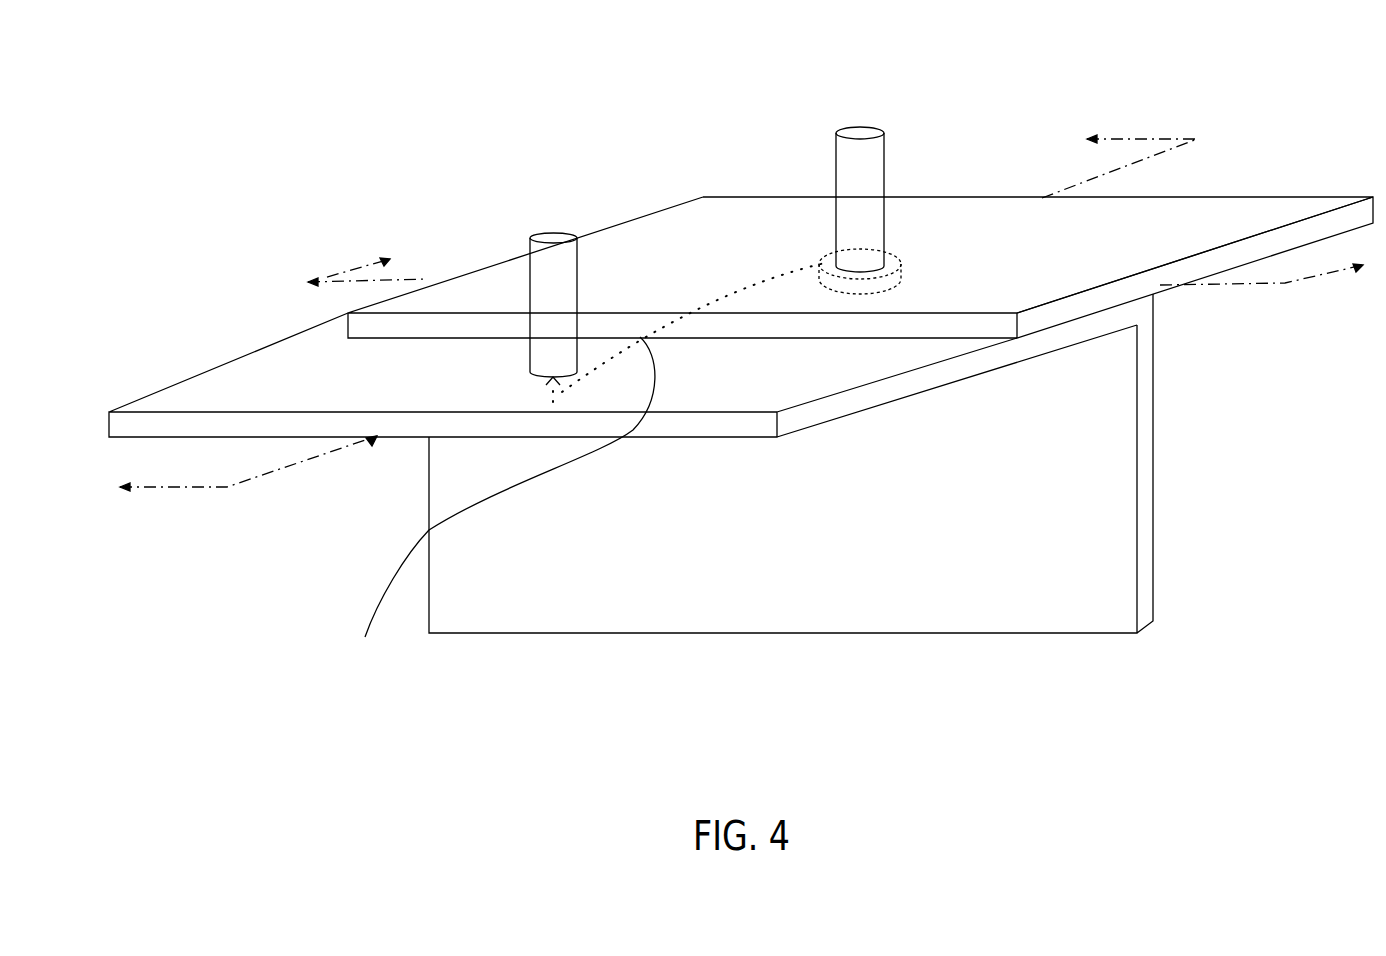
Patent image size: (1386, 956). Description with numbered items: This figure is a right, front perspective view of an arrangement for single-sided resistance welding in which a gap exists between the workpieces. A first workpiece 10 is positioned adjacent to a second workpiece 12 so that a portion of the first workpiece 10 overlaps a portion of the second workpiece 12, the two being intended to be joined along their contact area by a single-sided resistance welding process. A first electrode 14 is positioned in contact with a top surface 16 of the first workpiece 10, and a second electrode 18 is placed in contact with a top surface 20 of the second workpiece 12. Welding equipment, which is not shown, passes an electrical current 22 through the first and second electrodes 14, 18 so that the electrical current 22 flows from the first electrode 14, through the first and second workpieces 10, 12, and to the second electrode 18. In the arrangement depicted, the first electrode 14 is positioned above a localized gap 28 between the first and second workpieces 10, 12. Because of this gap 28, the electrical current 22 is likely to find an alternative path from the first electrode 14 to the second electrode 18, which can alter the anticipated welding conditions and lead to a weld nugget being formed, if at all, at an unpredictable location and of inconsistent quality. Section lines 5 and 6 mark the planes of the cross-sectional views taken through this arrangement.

The first workpiece 10 is at (682, 203).
The second workpiece 12 is at (1087, 462).
The first electrode 14 is at (836, 170).
The top surface 16 is at (1200, 222).
The second electrode 18 is at (555, 236).
The top surface 20 is at (447, 379).
The electrical current 22 is at (499, 504).
The gap 28 is at (890, 278).
The section line 5- 5 is at (643, 315).
The section line 6- 6 is at (846, 261).